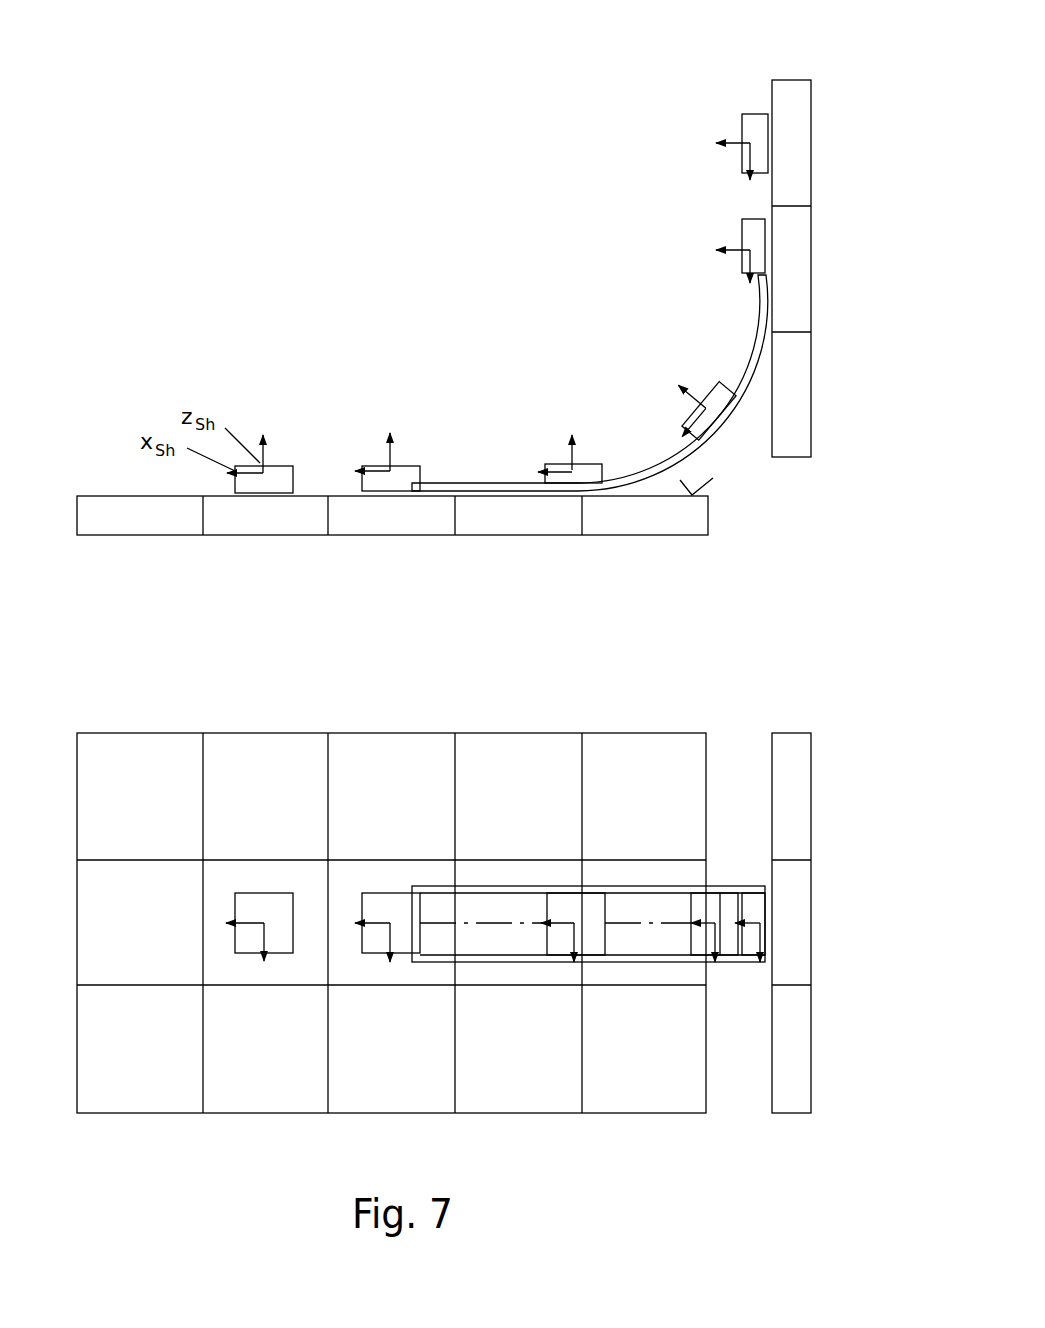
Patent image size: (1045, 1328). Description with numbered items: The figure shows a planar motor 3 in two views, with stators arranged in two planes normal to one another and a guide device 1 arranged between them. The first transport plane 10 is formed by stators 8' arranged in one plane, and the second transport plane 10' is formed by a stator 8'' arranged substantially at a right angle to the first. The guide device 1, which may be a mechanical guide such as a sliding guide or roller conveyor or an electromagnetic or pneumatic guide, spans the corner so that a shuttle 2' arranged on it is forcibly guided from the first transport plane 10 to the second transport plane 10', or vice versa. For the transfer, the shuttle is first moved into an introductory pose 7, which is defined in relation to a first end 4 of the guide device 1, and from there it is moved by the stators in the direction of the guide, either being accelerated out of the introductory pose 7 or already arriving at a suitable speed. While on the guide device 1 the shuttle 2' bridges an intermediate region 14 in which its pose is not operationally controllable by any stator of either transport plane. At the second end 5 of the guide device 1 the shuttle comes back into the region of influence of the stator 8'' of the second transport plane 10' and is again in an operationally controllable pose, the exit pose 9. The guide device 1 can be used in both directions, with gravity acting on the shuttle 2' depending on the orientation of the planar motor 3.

The guide device 1 is at (648, 467).
The shuttle 2' is at (690, 395).
The planar motor 3 is at (118, 555).
The first end of the guide device 4 is at (757, 272).
The second end of the guide device 5 is at (418, 892).
The introductory pose 7 is at (742, 228).
The stator 8' is at (795, 562).
The stator of the second transport plane 8'' is at (392, 804).
The exit pose 9 is at (403, 480).
The first transport plane 10 is at (723, 404).
The second transport plane 10' is at (734, 535).
The intermediate region 14 is at (742, 473).